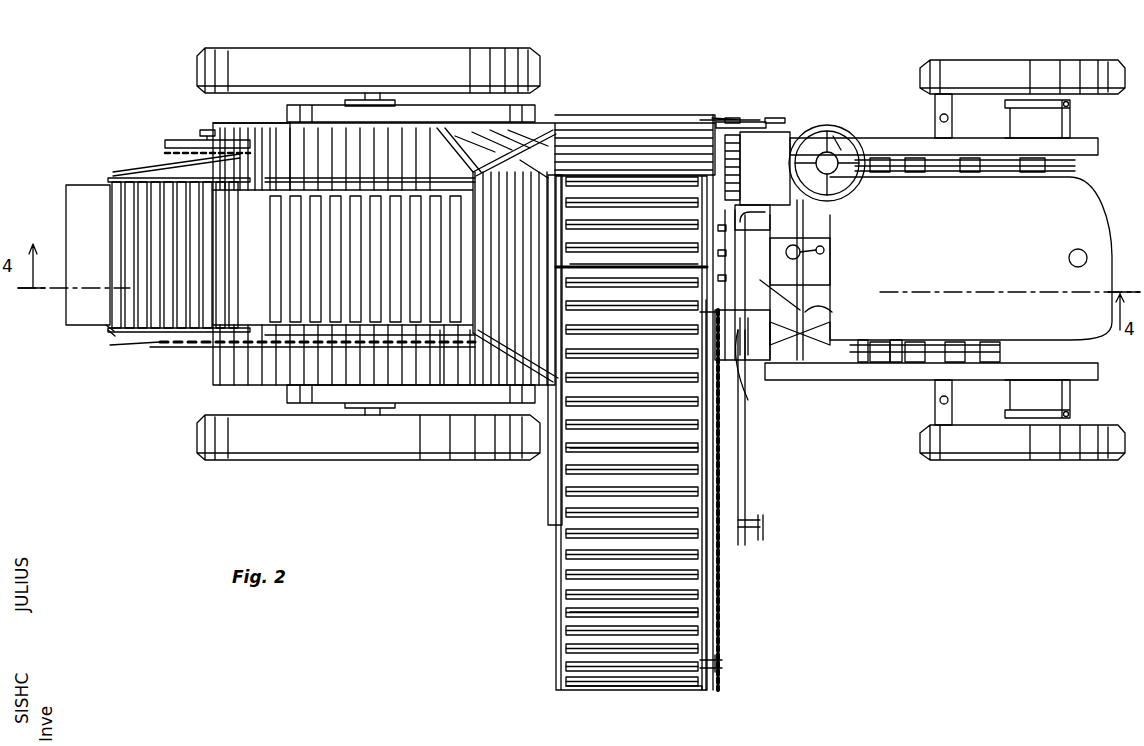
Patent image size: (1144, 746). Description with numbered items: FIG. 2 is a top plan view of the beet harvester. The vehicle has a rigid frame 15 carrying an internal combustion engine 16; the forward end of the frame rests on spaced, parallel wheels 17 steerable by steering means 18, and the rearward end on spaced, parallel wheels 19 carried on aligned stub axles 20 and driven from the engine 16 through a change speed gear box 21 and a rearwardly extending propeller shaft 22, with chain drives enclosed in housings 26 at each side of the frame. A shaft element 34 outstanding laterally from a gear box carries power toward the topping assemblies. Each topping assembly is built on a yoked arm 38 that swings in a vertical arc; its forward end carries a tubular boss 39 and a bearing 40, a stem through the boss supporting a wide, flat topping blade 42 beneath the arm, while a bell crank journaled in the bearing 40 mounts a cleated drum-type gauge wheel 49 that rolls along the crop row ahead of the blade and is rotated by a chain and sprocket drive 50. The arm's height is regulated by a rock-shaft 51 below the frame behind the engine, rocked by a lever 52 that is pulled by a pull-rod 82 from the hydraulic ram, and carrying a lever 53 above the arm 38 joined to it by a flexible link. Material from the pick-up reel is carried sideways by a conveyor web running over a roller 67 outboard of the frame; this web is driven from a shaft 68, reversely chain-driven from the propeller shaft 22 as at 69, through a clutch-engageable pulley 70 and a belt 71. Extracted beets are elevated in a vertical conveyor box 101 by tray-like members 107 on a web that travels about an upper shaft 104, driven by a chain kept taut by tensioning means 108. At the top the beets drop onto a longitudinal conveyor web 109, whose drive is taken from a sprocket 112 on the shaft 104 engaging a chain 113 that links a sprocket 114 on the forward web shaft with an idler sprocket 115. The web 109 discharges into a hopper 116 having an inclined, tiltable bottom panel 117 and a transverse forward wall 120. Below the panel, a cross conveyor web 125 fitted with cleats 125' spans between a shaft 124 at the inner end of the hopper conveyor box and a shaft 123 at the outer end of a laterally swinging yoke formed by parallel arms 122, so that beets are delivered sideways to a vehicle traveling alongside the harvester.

The rigid frame 15 is at (931, 256).
The internal combustion engine 16 is at (971, 258).
The steerable wheels 17 is at (1022, 260).
The steering means 18 is at (1083, 403).
The driven wheels 19 is at (368, 254).
The stub axles 20 is at (378, 97).
The change speed gear box 21 is at (782, 241).
The propeller shaft 22 is at (556, 268).
The housings 26 is at (532, 122).
The shaft element 34 is at (738, 118).
The yoked arm 38 is at (796, 184).
The tubular boss 39 is at (869, 338).
The bearing 40 is at (897, 338).
The topping blade 42 is at (818, 306).
The gauge wheel 49 is at (924, 174).
The chain and sprocket drive 50 is at (838, 356).
The rock-shaft 51 is at (800, 290).
The lever 52 is at (796, 118).
The lever 53 is at (830, 320).
The roller 67 is at (745, 518).
The shaft 68 is at (748, 388).
The chain drive 69 is at (786, 258).
The clutch-engageable pulley 70 is at (748, 378).
The belt 71 is at (747, 454).
The pull-rod 82 is at (690, 118).
The conveyor box 101 is at (135, 180).
The shaft 104 is at (228, 150).
The tray-like members 107 is at (88, 255).
The tensioning means 108 is at (112, 330).
The conveyor web 109 is at (285, 128).
The sprocket 112 is at (245, 342).
The chain 113 is at (252, 345).
The sprocket 114 is at (466, 348).
The idler sprocket 115 is at (172, 345).
The hopper 116 is at (612, 136).
The bottom panel 117 is at (440, 372).
The hopper forward wall 120 is at (718, 118).
The yoke arms 122 is at (558, 564).
The shaft 123 is at (712, 672).
The shaft 124 is at (718, 184).
The conveyor web 125 is at (602, 444).
The cleats 125' is at (634, 702).